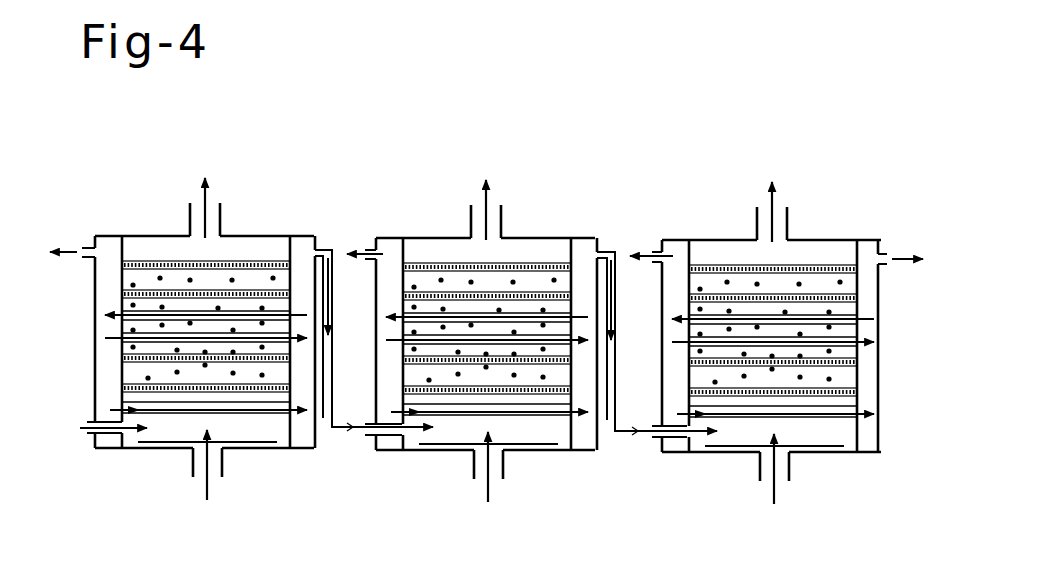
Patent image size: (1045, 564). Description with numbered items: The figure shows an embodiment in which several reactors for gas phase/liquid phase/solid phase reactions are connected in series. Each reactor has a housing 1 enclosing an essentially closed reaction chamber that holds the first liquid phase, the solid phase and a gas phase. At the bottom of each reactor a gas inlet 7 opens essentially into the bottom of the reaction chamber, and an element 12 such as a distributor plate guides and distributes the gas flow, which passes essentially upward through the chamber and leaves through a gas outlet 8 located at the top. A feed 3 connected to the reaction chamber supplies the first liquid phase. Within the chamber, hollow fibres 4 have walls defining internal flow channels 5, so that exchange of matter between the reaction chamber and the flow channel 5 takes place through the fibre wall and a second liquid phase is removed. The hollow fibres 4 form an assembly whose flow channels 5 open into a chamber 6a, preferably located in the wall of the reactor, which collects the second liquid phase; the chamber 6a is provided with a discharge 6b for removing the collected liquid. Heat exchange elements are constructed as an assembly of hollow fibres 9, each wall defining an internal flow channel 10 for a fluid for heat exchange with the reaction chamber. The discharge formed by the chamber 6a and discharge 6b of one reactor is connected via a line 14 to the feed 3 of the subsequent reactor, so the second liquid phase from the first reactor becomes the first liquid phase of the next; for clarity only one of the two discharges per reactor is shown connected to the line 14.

The housing 1 is at (155, 233).
The feed 3 is at (93, 438).
The hollow fibre 4 is at (822, 406).
The flow channel 5 is at (150, 404).
The chamber 6a is at (110, 242).
The discharge 6b is at (88, 243).
The gas inlet 7 is at (214, 465).
The gas outlet 8 is at (218, 212).
The hollow fibre 9 is at (139, 268).
The flow channel 10 is at (853, 300).
The element for guiding and/or distributing the gas flow 12 is at (155, 444).
The line 14 is at (343, 432).